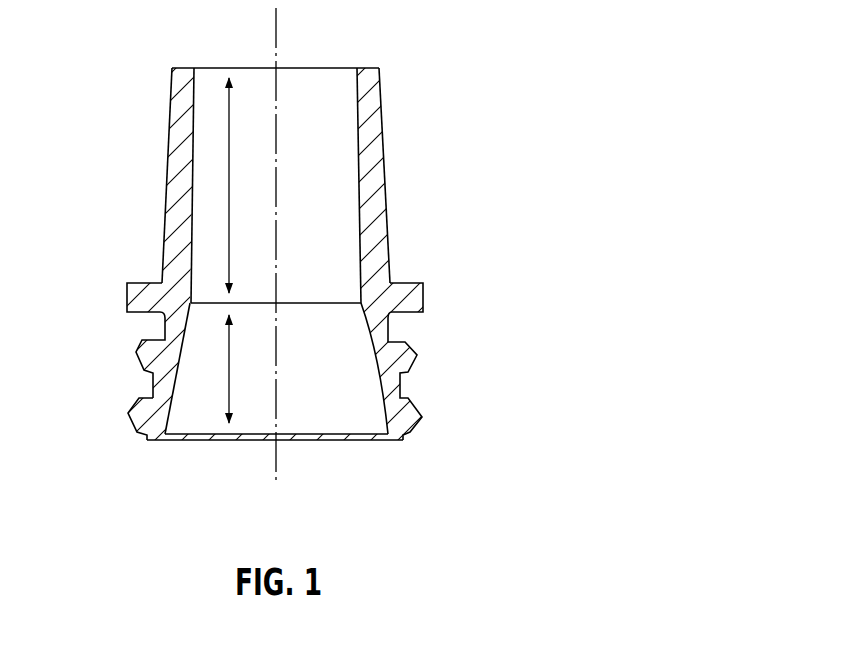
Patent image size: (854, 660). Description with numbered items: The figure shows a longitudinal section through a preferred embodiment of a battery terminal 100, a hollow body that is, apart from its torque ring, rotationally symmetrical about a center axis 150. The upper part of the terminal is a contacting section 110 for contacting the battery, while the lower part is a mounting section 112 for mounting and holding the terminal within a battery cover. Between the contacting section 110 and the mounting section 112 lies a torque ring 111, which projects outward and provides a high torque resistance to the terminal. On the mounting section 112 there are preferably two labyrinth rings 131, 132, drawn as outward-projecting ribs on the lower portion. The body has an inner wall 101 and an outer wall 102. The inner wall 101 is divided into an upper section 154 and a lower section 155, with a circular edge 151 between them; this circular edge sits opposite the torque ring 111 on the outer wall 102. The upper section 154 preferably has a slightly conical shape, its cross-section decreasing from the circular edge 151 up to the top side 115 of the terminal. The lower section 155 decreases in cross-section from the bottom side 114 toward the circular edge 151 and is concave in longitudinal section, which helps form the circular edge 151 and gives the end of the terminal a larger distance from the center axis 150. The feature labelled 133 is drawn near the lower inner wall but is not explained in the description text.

The battery terminal 100 is at (407, 70).
The inner wall 101 is at (343, 107).
The outer wall 102 is at (392, 125).
The contacting section 110 is at (385, 174).
The torque ring 111 is at (424, 296).
The mounting section 112 is at (428, 367).
The bottom side 114 is at (399, 442).
The top side 115 is at (368, 68).
The labyrinth ring 131 is at (137, 352).
The labyrinth ring 132 is at (130, 413).
The lower inner wall 133 is at (167, 405).
The center axis 150 is at (275, 13).
The circular edge 151 is at (311, 303).
The upper section 154 is at (231, 181).
The lower section 155 is at (231, 366).